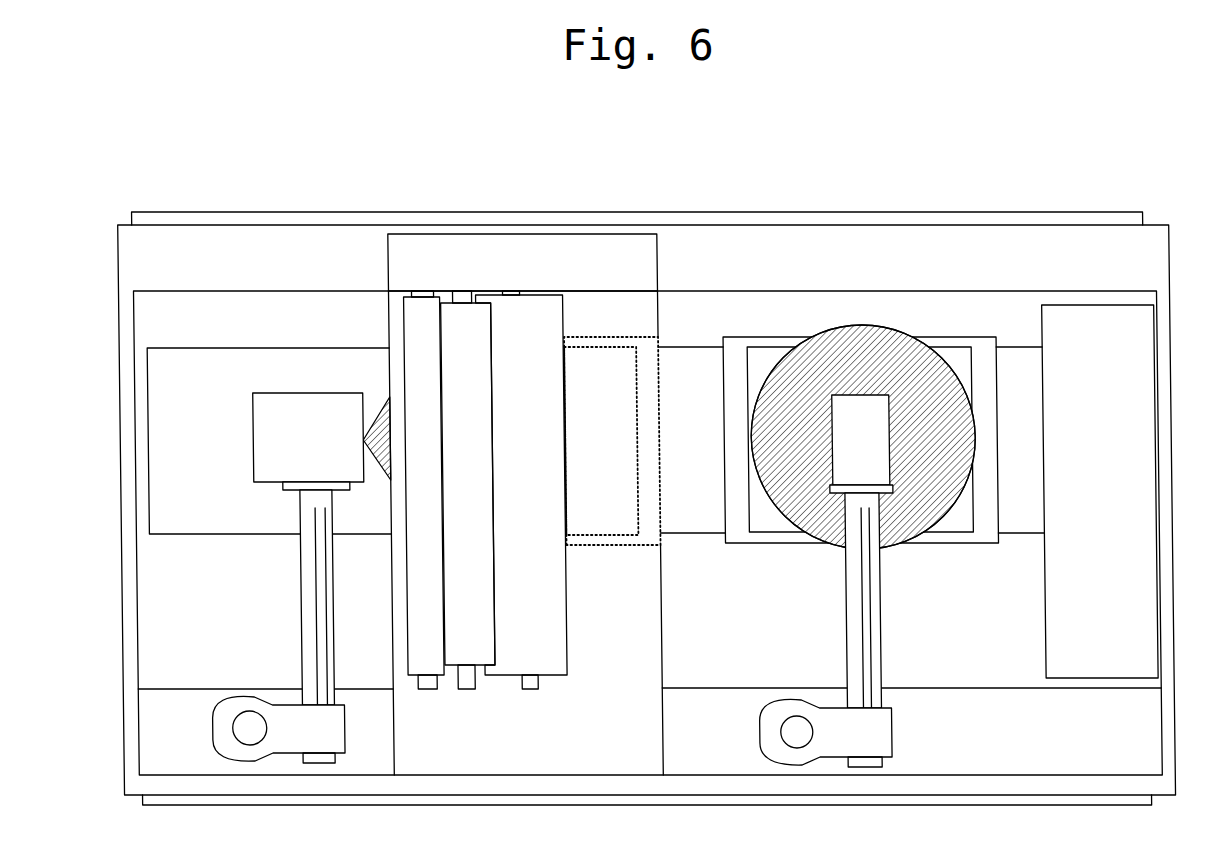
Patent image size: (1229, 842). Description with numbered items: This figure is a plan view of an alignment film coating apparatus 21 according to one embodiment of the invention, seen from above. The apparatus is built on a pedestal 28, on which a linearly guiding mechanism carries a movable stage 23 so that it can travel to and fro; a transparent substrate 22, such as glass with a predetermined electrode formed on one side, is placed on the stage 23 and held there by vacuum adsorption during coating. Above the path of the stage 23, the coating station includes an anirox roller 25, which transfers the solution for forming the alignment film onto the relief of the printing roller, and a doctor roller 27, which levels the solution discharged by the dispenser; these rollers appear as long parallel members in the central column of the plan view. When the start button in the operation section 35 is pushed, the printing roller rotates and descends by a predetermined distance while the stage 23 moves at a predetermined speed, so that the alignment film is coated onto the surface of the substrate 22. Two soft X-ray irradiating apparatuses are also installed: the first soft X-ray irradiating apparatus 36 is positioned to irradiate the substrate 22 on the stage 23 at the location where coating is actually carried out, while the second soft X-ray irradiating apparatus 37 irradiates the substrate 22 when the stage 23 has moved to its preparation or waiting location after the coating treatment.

The alignment film coating apparatus 21 is at (1117, 210).
The transparent substrate 22 is at (957, 525).
The movable stage 23 is at (986, 533).
The anirox roller 25 is at (469, 323).
The doctor roller 27 is at (420, 315).
The pedestal 28 is at (142, 577).
The operation section 35 is at (1118, 510).
The first soft X-ray irradiating apparatus 36 is at (274, 453).
The second soft X-ray irradiating apparatus 37 is at (863, 412).